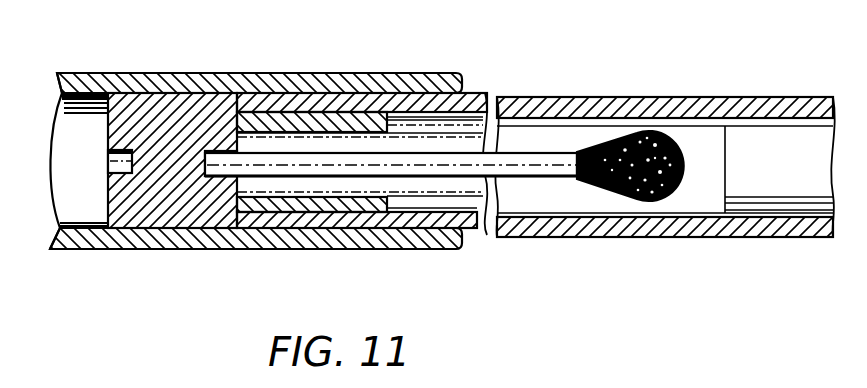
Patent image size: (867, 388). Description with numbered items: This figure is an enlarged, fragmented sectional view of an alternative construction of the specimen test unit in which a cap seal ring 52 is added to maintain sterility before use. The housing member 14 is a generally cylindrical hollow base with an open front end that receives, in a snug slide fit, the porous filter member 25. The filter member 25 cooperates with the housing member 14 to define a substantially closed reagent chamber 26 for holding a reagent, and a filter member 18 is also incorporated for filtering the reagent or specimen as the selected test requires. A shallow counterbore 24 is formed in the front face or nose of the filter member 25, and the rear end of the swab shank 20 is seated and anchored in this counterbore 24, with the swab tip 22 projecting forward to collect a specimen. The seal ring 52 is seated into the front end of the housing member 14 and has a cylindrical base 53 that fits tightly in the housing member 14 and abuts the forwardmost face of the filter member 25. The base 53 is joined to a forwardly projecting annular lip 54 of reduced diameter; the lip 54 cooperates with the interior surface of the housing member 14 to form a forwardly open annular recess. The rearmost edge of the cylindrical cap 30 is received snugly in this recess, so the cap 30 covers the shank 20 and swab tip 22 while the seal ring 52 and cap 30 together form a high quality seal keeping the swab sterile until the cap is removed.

The housing member 14 is at (118, 73).
The filter member 18 is at (745, 134).
The swab shank 20 is at (453, 172).
The swab tip 22 is at (645, 205).
The counterbore 24 is at (235, 156).
The filter member 25 is at (170, 80).
The reagent chamber 26 is at (85, 189).
The cap 30 is at (337, 76).
The cap seal ring 52 is at (275, 212).
The cylindrical base 53 is at (245, 216).
The annular lip 54 is at (374, 220).